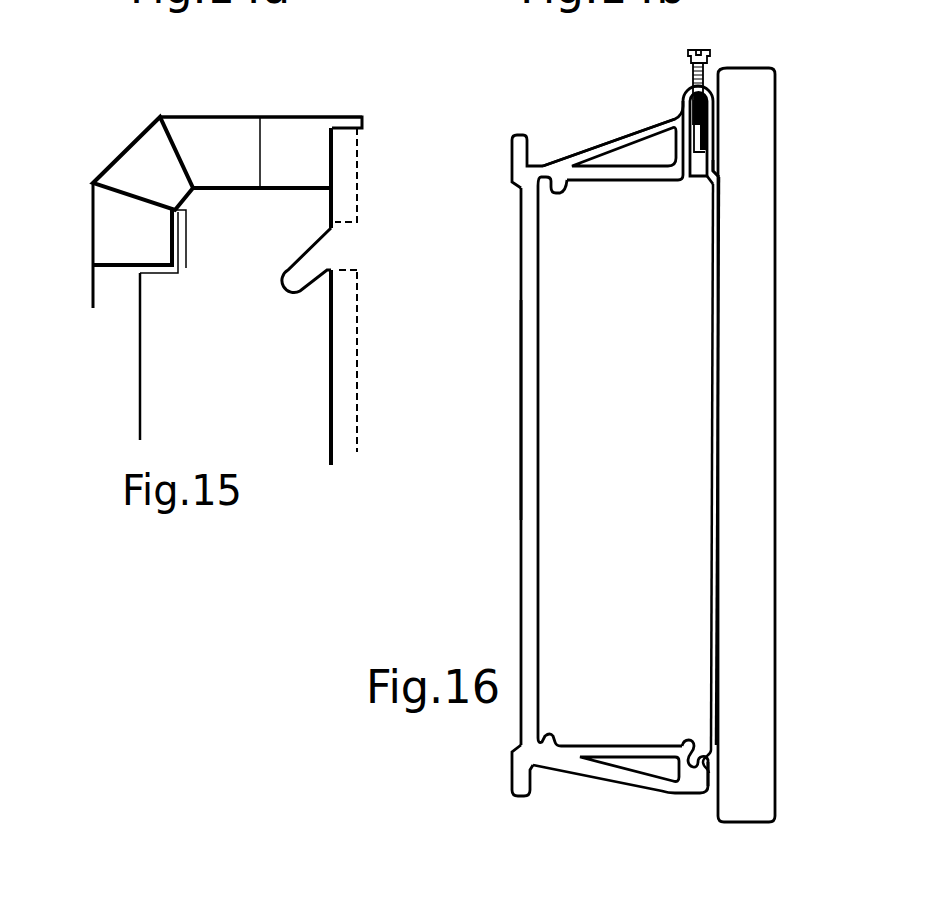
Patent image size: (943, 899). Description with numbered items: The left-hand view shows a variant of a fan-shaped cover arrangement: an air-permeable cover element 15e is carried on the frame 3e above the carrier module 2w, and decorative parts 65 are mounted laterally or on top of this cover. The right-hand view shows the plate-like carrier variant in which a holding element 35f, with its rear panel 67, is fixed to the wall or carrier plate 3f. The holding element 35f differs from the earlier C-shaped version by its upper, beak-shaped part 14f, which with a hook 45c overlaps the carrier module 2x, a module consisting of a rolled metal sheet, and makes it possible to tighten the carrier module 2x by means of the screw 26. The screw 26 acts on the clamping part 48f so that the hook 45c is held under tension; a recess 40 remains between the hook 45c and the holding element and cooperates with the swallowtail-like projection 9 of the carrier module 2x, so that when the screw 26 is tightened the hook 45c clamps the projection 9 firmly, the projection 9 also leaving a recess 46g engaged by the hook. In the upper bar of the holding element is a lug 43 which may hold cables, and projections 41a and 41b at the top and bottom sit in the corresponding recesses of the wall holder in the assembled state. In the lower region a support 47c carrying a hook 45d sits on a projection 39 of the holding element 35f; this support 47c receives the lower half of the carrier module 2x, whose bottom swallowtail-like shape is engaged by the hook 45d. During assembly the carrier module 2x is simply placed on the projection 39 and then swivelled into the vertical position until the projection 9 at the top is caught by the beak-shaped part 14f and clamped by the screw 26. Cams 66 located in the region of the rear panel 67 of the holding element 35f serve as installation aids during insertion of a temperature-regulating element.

In FIG. 15, the carrier module 2w is at (136, 376).
In FIG. 15, the frame 3e is at (92, 292).
In FIG. 15, the cover element 15e is at (238, 115).
In FIG. 15, the decorative part 65 is at (147, 195).
In FIG. 16, the carrier module 2x is at (712, 382).
In FIG. 16, the plate-like carrier 3f is at (776, 378).
In FIG. 16, the swallowtail-like projection 9 is at (710, 158).
In FIG. 16, the beak-shaped upper part 14f is at (658, 101).
In FIG. 16, the screw 26 is at (712, 63).
In FIG. 16, the holding element 35f is at (520, 327).
In FIG. 16, the projection 39 is at (722, 781).
In FIG. 16, the recess 40 is at (690, 176).
In FIG. 16, the projection 41a is at (517, 147).
In FIG. 16, the projection 41b is at (511, 782).
In FIG. 16, the lug 43 is at (637, 148).
In FIG. 16, the hook 45c is at (716, 115).
In FIG. 16, the hook 45d is at (705, 793).
In FIG. 16, the recess 46g is at (715, 163).
In FIG. 16, the support 47c is at (608, 785).
In FIG. 16, the clamping part 48f is at (703, 122).
In FIG. 16, the cam 66 is at (553, 188).
In FIG. 16, the rear panel 67 is at (520, 412).